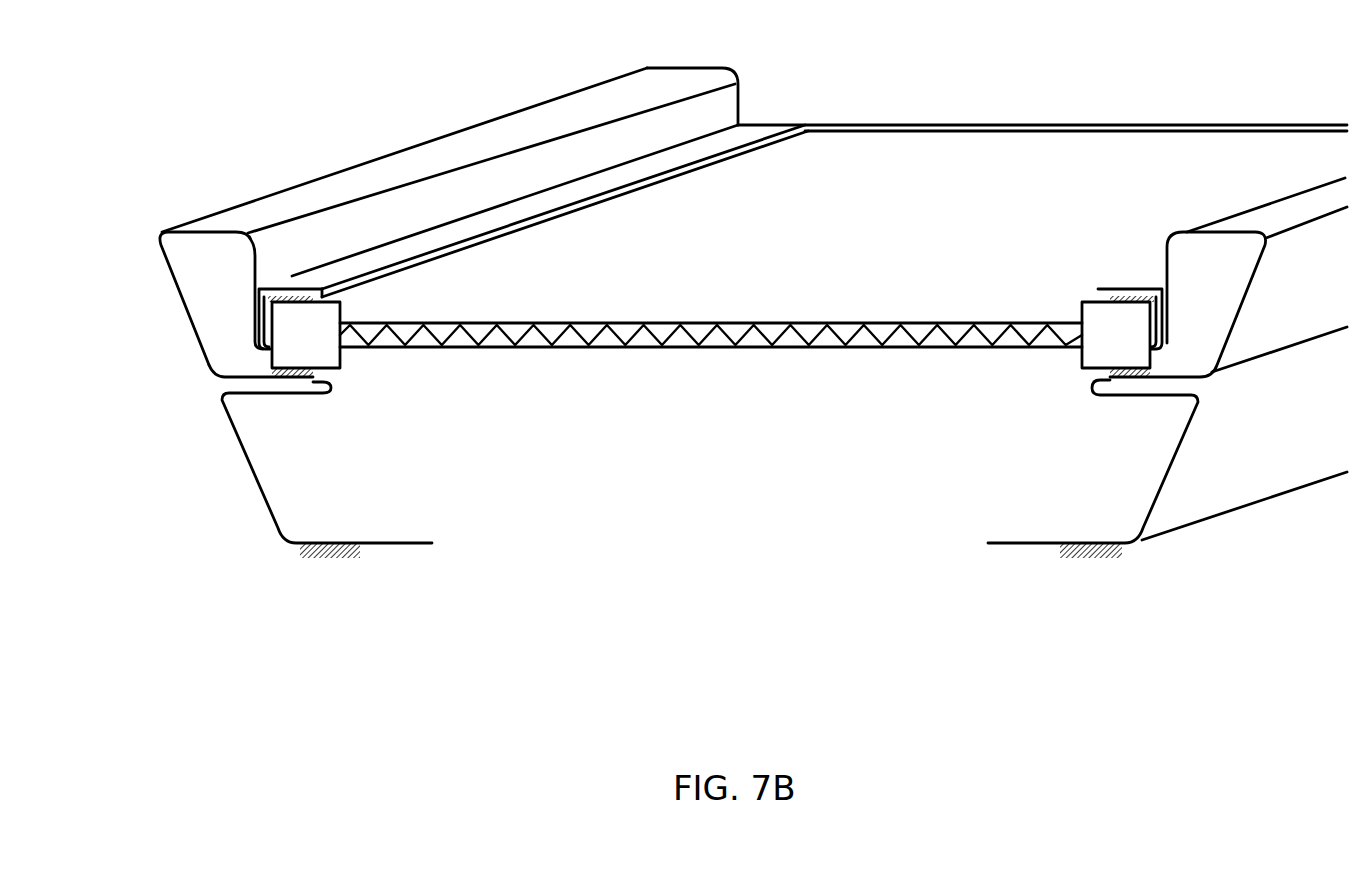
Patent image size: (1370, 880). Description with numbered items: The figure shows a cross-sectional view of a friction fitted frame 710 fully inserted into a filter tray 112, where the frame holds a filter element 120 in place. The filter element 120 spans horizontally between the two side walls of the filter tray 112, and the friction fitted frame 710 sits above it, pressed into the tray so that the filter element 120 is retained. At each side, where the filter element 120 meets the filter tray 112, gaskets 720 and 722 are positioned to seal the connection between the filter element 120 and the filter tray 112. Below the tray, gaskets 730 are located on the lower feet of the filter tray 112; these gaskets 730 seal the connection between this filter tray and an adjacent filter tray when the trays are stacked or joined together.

The filter tray 112 is at (167, 275).
The friction fitted frame 710 is at (533, 209).
The gasket 720 is at (293, 298).
The gasket 722 is at (313, 373).
The filter element 120 is at (642, 343).
The gasket 730 is at (345, 558).